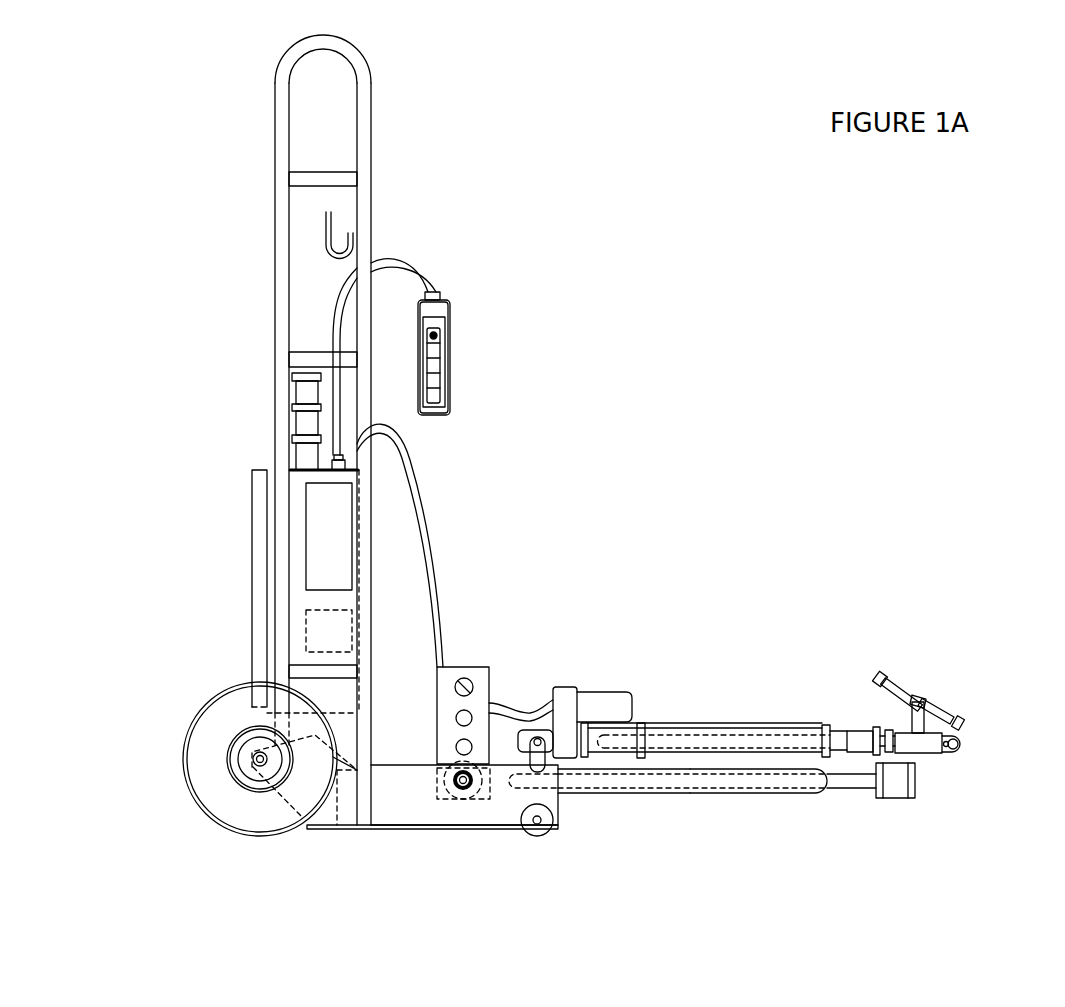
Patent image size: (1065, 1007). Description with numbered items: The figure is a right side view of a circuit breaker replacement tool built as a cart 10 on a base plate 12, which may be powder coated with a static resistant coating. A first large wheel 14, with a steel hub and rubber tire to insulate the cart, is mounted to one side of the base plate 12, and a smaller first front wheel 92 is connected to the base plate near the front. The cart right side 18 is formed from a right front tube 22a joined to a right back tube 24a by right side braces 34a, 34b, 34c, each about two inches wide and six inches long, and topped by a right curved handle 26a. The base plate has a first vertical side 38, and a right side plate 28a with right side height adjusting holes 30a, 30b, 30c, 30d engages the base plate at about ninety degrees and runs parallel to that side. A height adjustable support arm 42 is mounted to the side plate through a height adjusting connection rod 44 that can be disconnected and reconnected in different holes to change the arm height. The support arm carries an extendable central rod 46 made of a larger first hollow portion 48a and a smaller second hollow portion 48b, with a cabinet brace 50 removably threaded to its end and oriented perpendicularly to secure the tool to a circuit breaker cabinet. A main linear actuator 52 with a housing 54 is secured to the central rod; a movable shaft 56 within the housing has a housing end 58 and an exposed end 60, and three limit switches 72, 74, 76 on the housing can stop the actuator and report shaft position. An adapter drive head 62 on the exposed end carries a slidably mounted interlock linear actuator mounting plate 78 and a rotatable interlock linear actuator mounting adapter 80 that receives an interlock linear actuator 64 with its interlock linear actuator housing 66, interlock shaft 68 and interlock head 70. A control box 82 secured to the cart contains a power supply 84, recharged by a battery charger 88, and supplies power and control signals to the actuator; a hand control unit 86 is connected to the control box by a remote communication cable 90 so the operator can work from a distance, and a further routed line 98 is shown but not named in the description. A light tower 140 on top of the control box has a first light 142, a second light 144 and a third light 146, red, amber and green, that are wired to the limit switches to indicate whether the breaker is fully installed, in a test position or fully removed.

The cart 10 is at (210, 61).
The base plate 12 is at (373, 832).
The first large wheel 14 is at (217, 725).
The cart right side 18 is at (324, 429).
The right front tube 22a is at (364, 203).
The right back tube 24a is at (283, 210).
The right curved handle 26a is at (353, 55).
The right side plate 28a is at (445, 682).
The right side height adjusting hole 30a is at (470, 682).
The right side height adjusting hole 30b is at (455, 718).
The right side height adjusting hole 30c is at (455, 748).
The right side height adjusting hole 30d is at (467, 783).
The right side brace 34a is at (305, 175).
The right side brace 34b is at (305, 357).
The right side brace 34c is at (327, 672).
The first vertical side 38 is at (467, 807).
The height adjustable support arm 42 is at (756, 723).
The height adjusting connection rod 44 is at (452, 793).
The extendable central rod 46 is at (691, 798).
The first hollow portion 48a is at (602, 792).
The second hollow portion 48b is at (859, 782).
The cabinet brace 50 is at (897, 785).
The main linear actuator 52 is at (697, 722).
The housing 54 is at (712, 732).
The movable shaft 56 is at (857, 742).
The housing end 58 is at (603, 740).
The exposed end 60 is at (870, 738).
The adapter drive head 62 is at (922, 745).
The interlock linear actuator 64 is at (889, 659).
The interlock linear actuator housing 66 is at (935, 712).
The interlock shaft 68 is at (947, 718).
The interlock head 70 is at (962, 723).
The limit switch 72 is at (587, 740).
The limit switch 74 is at (643, 743).
The limit switch 76 is at (827, 738).
The interlock linear actuator mounting plate 78 is at (926, 732).
The interlock linear actuator mounting adapter 80 is at (917, 702).
The control box 82 is at (252, 485).
The power supply 84 is at (327, 630).
The hand control unit 86 is at (442, 310).
The battery charger 88 is at (327, 542).
The remote communication cable 90 is at (425, 267).
The first front wheel 92 is at (547, 830).
The power cable 98 is at (413, 477).
The light tower 140 is at (239, 411).
The first light 142 is at (305, 385).
The second light 144 is at (305, 432).
The third light 146 is at (305, 462).